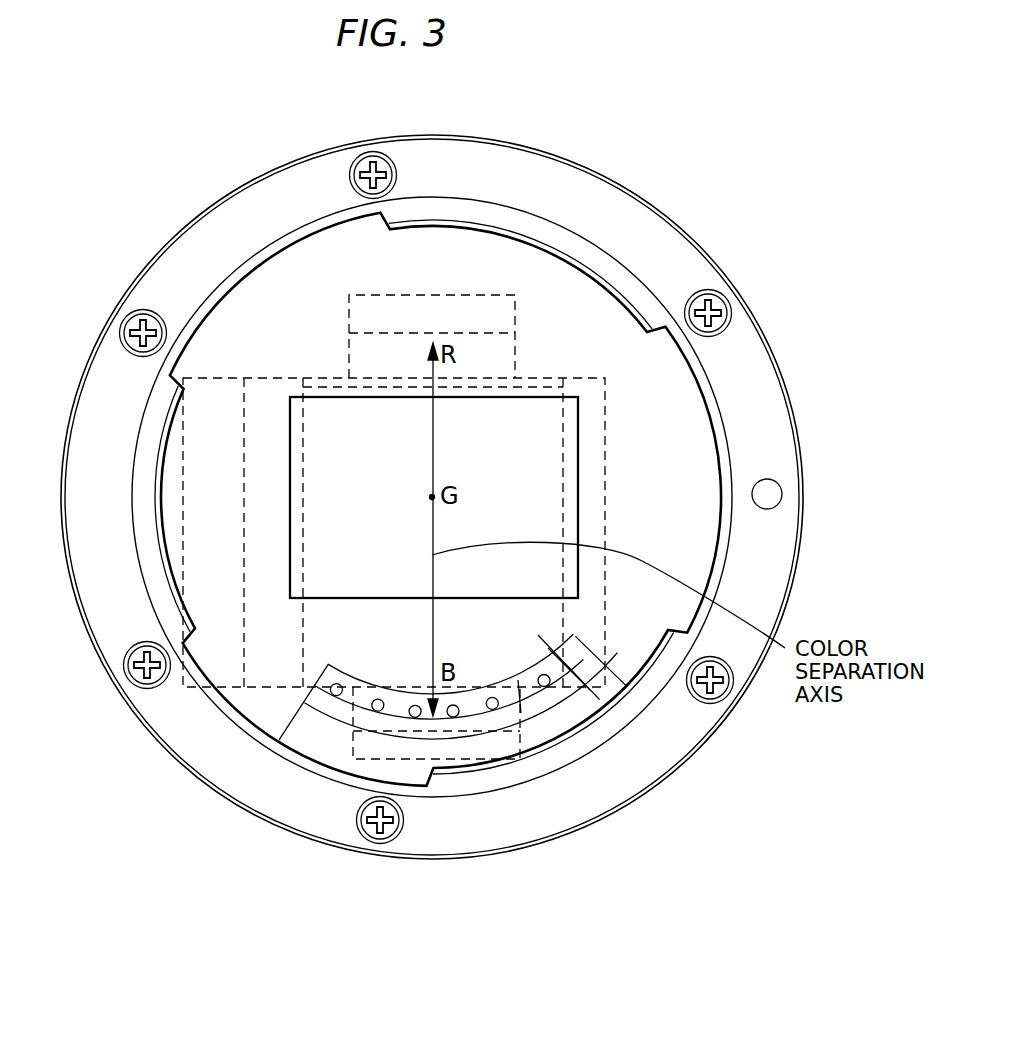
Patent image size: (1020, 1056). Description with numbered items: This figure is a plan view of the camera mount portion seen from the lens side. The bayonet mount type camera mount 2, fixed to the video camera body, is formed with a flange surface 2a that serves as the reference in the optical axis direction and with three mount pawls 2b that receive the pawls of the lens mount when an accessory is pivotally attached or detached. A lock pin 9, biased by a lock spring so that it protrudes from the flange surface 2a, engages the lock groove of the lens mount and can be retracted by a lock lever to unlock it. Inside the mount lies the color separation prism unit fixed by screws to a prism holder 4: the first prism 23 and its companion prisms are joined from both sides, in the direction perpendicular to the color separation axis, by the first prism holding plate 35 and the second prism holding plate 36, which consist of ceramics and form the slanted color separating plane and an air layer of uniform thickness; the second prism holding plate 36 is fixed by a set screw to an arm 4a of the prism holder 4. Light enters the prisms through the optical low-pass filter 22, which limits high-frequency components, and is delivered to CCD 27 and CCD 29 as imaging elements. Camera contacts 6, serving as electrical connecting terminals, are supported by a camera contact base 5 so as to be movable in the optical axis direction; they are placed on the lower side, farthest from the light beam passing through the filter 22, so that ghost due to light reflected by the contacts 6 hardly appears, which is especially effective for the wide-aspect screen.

The camera mount 2 is at (538, 147).
The flange surface 2a is at (480, 157).
The mount pawls 2b is at (563, 240).
The prism holder 4 is at (677, 395).
The arm 4a is at (213, 380).
The camera contact base 5 is at (350, 697).
The camera contacts 6 is at (562, 703).
The lock pin 9 is at (773, 490).
The optical low-pass filter 22 is at (523, 410).
The first prism 23 is at (608, 700).
The CCD 27 is at (437, 300).
The CCD 29 is at (476, 752).
The first prism holding plate 35 is at (270, 377).
The second prism holding plate 36 is at (588, 385).